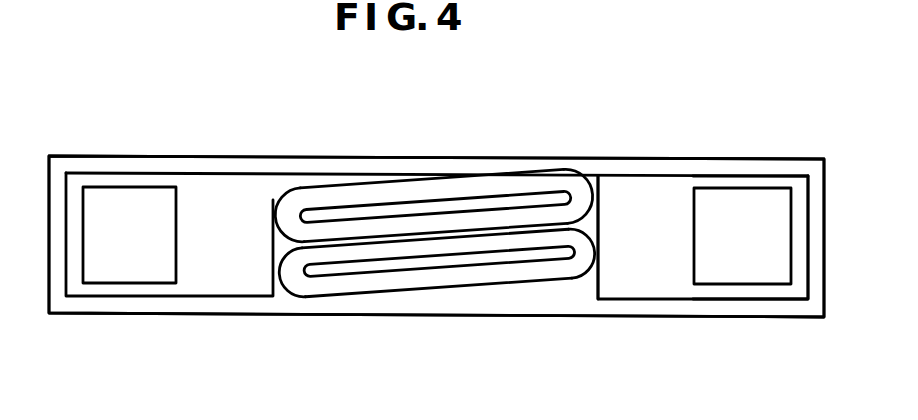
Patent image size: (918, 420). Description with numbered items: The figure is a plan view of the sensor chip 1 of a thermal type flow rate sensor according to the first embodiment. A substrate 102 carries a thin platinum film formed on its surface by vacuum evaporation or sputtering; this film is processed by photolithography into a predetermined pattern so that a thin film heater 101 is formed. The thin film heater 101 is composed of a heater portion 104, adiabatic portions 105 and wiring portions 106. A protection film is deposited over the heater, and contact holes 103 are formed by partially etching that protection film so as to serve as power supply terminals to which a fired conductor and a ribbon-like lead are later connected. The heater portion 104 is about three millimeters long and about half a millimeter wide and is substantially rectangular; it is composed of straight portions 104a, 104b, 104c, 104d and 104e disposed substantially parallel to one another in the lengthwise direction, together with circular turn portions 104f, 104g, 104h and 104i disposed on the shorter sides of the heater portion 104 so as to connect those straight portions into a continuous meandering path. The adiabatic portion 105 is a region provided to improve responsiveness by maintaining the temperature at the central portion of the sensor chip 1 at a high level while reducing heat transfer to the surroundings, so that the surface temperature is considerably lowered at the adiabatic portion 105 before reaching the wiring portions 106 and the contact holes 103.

The sensor chip 1 is at (143, 156).
The thin film heater 101 is at (553, 293).
The substrate 102 is at (790, 308).
The contact holes 103 is at (732, 275).
The heater portion 104 is at (600, 143).
The straight portion 104a is at (470, 186).
The straight portion 104b is at (512, 205).
The straight portion 104c is at (400, 232).
The straight portion 104d is at (450, 260).
The straight portion 104e is at (510, 287).
The circular turn portion 104f is at (586, 196).
The circular turn portion 104g is at (287, 200).
The circular turn portion 104h is at (582, 272).
The circular turn portion 104i is at (286, 275).
The adiabatic portion 105 is at (690, 147).
The wiring portion 106 is at (812, 147).